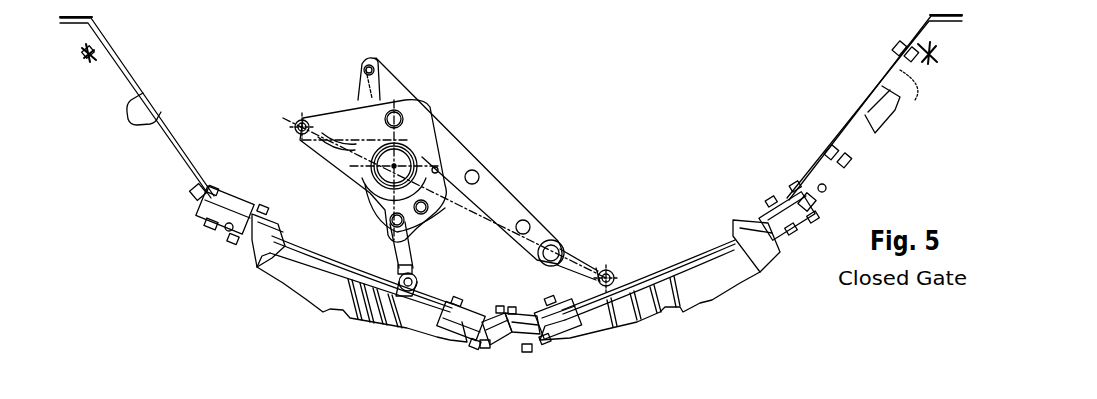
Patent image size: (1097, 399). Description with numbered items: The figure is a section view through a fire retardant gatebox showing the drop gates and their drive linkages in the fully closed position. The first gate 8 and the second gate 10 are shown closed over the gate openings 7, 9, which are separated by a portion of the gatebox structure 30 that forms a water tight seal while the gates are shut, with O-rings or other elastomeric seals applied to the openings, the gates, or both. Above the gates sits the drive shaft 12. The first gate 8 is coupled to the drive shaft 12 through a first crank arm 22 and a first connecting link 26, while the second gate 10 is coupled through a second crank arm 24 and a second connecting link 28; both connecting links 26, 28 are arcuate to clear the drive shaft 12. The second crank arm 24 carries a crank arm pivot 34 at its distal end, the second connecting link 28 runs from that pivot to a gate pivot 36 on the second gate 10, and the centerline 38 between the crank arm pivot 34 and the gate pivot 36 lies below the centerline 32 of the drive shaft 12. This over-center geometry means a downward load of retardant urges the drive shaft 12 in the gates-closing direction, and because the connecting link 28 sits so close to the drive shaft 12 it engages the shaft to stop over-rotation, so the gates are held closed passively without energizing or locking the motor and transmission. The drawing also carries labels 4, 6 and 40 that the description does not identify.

The gate arm 4 is at (133, 80).
The arm end bar 6 is at (74, 18).
The gate opening 7 is at (258, 207).
The first gate 8 is at (310, 303).
The gate opening 9 is at (767, 215).
The second gate 10 is at (680, 308).
The drive shaft 12 is at (392, 147).
The first crank arm 22 is at (357, 92).
The second crank arm 24 is at (358, 173).
The first connecting link 26 is at (394, 80).
The second connecting link 28 is at (500, 177).
The gatebox structure 30 is at (513, 347).
The centerline of the drive shaft 32 is at (403, 155).
The crank arm pivot 34 is at (302, 135).
The gate pivot 36 is at (610, 277).
The centerline 38 is at (477, 217).
The rotation axis 40 is at (384, 160).